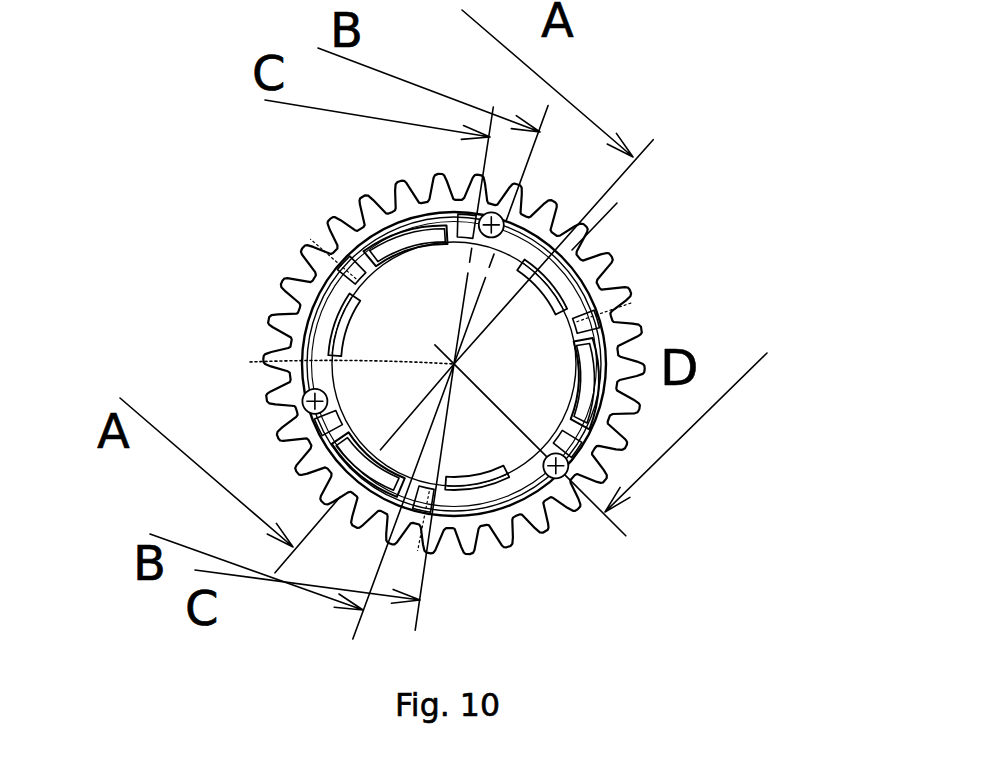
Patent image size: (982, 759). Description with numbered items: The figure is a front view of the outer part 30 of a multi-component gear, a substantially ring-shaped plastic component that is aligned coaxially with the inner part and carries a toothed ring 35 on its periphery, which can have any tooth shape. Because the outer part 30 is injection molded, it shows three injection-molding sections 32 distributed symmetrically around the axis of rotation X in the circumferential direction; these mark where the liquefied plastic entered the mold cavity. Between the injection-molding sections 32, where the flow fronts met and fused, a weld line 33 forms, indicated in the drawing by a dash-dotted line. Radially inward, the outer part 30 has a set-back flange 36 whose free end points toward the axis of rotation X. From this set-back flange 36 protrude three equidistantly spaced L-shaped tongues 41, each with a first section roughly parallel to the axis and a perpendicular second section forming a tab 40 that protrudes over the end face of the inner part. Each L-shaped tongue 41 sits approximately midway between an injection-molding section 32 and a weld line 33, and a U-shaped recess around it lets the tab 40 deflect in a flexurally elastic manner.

The outer part 30 is at (241, 232).
The injection-molding section 32 is at (303, 400).
The weld line 33 is at (577, 322).
The toothed ring 35 is at (333, 234).
The set-back flange 36 is at (588, 342).
The tab 40 is at (427, 240).
The L-shaped tongue 41 is at (603, 388).
The axis of rotation X is at (250, 362).